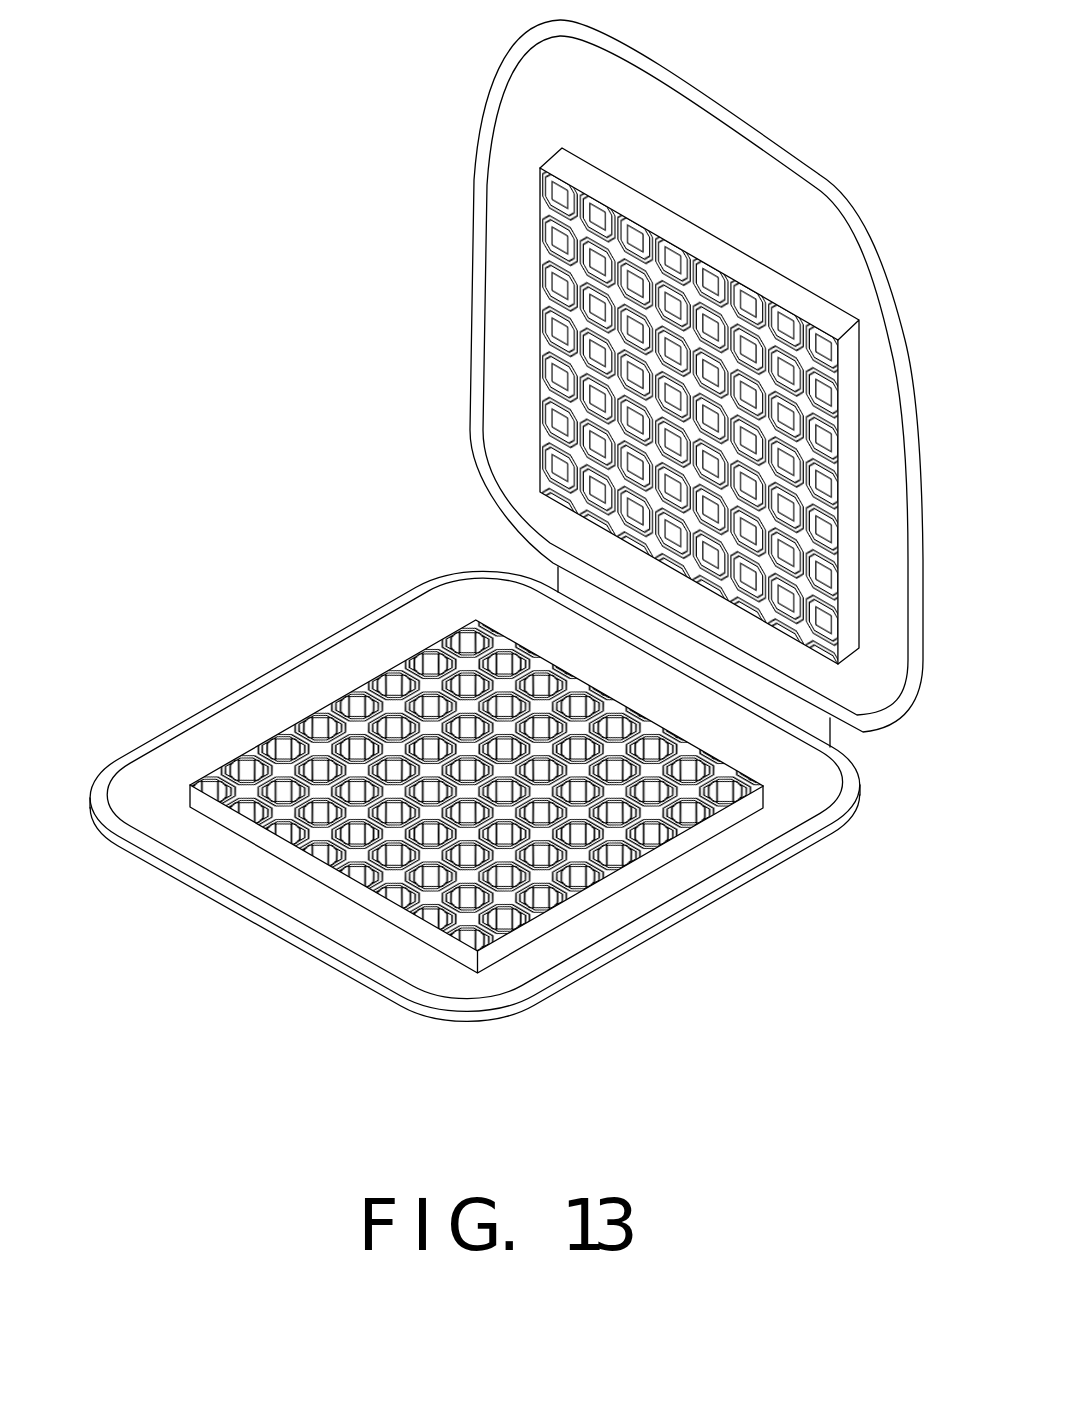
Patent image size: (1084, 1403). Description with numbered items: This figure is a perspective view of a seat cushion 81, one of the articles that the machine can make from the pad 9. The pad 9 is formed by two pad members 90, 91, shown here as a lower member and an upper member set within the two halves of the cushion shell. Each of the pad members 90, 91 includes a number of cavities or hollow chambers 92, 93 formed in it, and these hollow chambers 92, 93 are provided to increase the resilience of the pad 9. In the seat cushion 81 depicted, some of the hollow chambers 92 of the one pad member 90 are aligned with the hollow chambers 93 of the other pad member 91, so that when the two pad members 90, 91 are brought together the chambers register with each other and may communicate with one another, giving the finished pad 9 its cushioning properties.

The seat cushion 81 is at (228, 311).
The pad 9 is at (386, 588).
The pad member 90 is at (461, 751).
The pad member 91 is at (615, 395).
The hollow chamber 92 is at (360, 698).
The hollow chamber 93 is at (540, 300).